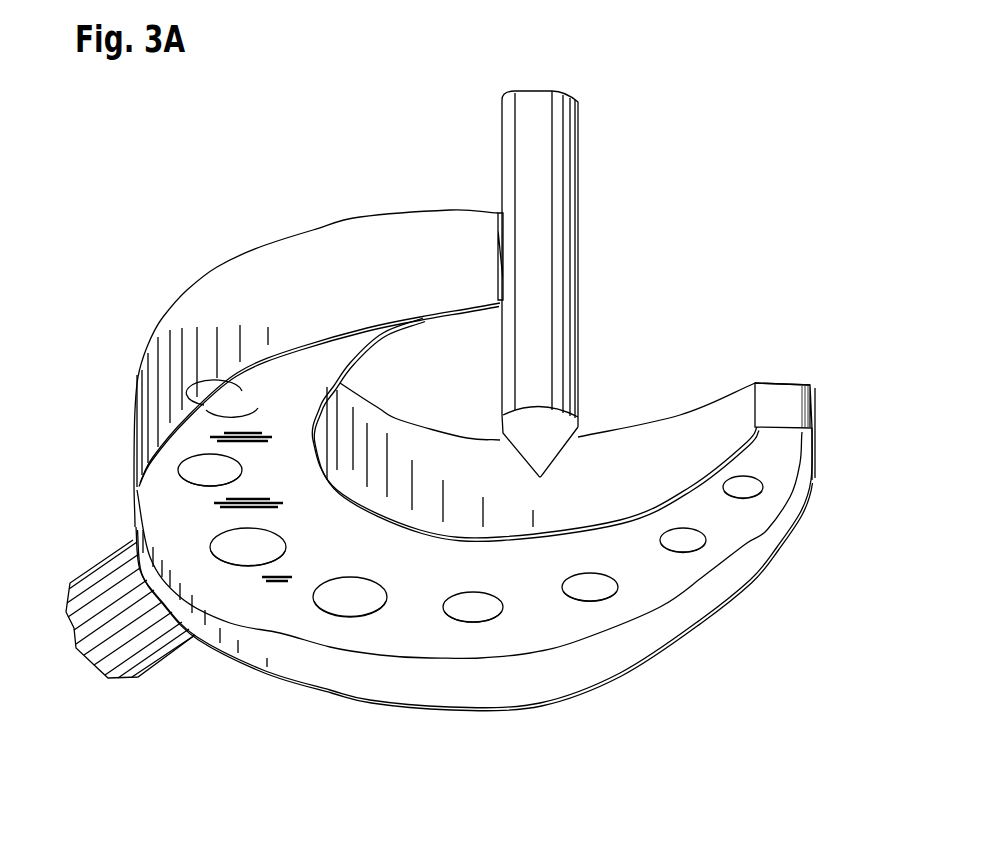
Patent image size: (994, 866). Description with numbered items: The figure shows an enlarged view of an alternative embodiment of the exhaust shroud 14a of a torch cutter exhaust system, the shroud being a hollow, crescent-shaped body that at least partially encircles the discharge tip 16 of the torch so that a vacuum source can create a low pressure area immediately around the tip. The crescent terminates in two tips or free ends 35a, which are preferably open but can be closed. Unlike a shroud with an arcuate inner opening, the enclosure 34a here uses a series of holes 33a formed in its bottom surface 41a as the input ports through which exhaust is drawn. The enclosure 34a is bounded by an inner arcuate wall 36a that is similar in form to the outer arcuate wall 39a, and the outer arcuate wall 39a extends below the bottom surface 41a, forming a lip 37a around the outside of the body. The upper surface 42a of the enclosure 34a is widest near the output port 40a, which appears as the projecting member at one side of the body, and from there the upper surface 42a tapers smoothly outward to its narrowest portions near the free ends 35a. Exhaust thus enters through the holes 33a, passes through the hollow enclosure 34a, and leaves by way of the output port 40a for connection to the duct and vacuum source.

The exhaust shroud 14a is at (233, 212).
The discharge tip 16 is at (553, 457).
The holes 33a is at (467, 613).
The enclosure 34a is at (213, 271).
The free ends 35a is at (503, 247).
The inner arcuate wall 36a is at (687, 443).
The lip 37a is at (543, 673).
The outer arcuate wall 39a is at (323, 255).
The output port 40a is at (133, 535).
The bottom surface 41a is at (503, 640).
The upper surface 42a is at (772, 383).